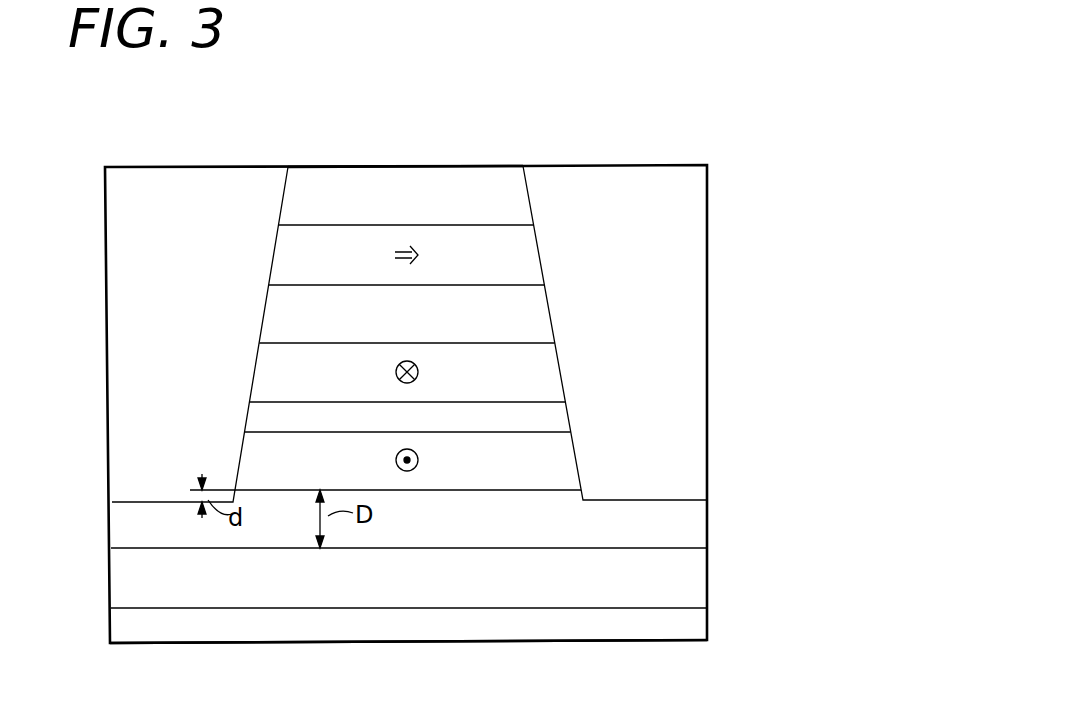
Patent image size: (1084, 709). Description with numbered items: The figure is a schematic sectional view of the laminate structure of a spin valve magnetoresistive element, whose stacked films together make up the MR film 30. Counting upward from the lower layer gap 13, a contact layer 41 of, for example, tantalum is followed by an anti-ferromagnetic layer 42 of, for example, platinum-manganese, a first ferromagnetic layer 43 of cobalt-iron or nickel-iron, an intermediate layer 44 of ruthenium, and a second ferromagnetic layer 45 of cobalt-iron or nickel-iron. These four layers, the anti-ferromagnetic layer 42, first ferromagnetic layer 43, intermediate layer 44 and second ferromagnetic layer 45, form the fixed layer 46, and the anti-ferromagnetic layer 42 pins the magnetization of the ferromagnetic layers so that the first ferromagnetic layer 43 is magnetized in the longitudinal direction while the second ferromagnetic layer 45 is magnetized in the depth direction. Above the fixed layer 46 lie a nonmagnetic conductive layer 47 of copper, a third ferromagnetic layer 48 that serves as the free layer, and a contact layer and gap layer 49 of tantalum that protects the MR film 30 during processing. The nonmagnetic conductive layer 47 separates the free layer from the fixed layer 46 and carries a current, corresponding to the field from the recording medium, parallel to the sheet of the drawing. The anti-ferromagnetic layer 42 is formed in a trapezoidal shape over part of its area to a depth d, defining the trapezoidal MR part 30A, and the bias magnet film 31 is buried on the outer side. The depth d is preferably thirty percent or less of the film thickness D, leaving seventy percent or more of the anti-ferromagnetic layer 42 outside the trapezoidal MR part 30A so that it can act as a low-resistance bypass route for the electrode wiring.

The lower layer gap 13 is at (683, 622).
The MR film 30 is at (502, 390).
The trapezoidal MR part 30A is at (401, 151).
The bias magnet film 31 is at (118, 295).
The contact layer 41 is at (441, 584).
The anti-ferromagnetic layer 42 is at (441, 528).
The first ferromagnetic layer 43 is at (553, 467).
The intermediate layer 44 is at (542, 425).
The second ferromagnetic layer 45 is at (542, 377).
The fixed layer 46 is at (472, 448).
The nonmagnetic conductive layer 47 is at (530, 313).
The third ferromagnetic layer 48 is at (518, 257).
The contact layer and gap layer 49 is at (517, 208).